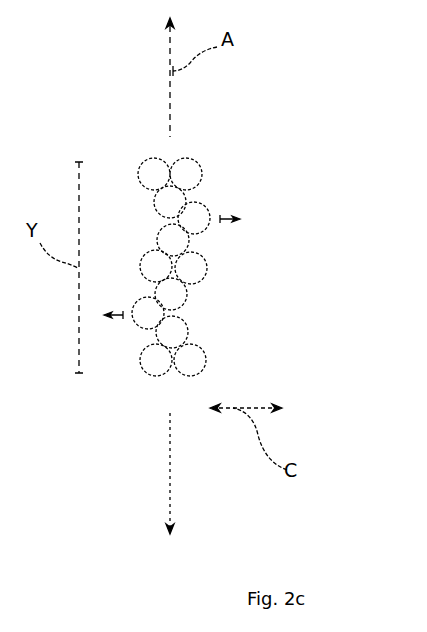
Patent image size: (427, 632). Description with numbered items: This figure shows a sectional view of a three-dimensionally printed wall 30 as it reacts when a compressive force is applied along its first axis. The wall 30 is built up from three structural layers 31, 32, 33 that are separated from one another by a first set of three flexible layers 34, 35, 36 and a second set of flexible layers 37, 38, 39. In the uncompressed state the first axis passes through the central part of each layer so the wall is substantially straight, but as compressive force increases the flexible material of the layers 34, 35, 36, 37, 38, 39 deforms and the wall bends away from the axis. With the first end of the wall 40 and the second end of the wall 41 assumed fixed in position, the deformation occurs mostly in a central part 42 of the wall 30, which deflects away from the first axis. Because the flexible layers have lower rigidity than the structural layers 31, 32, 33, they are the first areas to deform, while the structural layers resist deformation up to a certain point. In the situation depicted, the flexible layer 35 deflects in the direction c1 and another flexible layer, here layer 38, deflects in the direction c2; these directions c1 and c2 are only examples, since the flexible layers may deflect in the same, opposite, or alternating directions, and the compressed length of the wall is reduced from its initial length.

The wall 30 is at (250, 48).
The structural layer 31 is at (153, 158).
The first end of the wall 40 is at (187, 158).
The flexible layer 34 is at (148, 209).
The flexible layer 35 is at (189, 241).
The deflection direction c1 is at (221, 214).
The flexible layer 36 is at (162, 238).
The structural layer 32 is at (190, 266).
The central part of the wall 42 is at (233, 260).
The flexible layer 37 is at (183, 302).
The flexible layer 38 is at (145, 315).
The deflection direction c2 is at (117, 318).
The flexible layer 39 is at (185, 335).
The structural layer 33 is at (185, 359).
The second end of the wall 41 is at (138, 475).